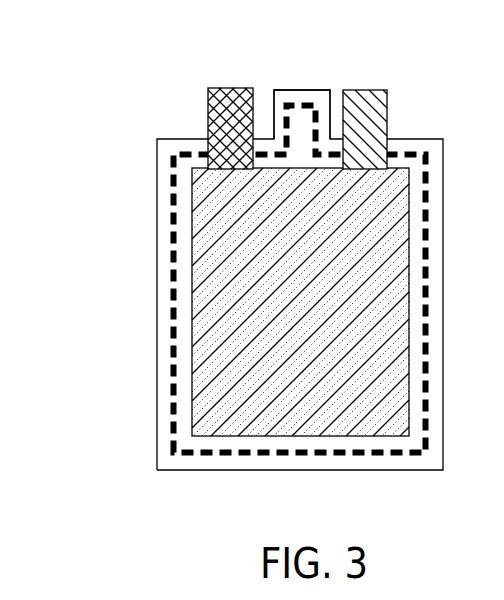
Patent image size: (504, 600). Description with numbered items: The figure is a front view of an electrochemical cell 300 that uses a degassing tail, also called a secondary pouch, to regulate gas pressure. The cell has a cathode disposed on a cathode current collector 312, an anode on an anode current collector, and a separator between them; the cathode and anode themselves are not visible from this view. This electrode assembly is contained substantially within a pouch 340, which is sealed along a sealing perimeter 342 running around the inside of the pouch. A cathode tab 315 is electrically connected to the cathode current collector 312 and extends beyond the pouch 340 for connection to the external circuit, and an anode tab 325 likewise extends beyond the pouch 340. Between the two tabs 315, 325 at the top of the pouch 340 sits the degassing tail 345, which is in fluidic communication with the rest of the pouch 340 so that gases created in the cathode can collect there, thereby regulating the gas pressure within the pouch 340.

The electrochemical cell 300 is at (100, 109).
The cathode current collector 312 is at (193, 247).
The cathode tab 315 is at (212, 115).
The anode tab 325 is at (388, 113).
The pouch 340 is at (157, 435).
The sealing perimeter 342 is at (156, 369).
The degassing tail 345 is at (295, 80).